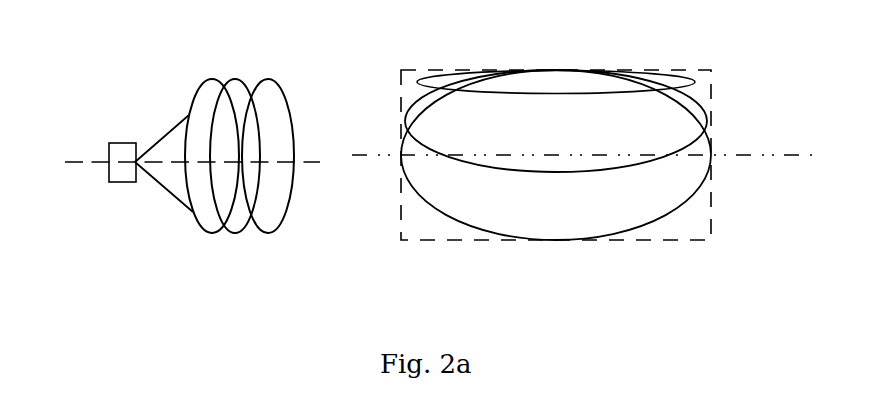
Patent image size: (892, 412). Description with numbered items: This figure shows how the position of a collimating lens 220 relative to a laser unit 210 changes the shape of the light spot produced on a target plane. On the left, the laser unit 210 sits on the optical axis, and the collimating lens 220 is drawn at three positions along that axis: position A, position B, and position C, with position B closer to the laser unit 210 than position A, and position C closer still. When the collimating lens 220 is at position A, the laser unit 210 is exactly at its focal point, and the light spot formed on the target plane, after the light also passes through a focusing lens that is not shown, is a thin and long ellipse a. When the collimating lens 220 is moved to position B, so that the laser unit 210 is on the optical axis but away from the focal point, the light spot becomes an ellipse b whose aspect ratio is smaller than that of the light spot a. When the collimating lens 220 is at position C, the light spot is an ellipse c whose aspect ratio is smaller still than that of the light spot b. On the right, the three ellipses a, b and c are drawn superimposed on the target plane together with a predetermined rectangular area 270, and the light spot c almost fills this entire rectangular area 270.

The laser unit 210 is at (115, 148).
The collimating lens 220 is at (239, 164).
The predetermined rectangular area 270 is at (591, 163).
The position A is at (268, 68).
The position B is at (233, 68).
The position C is at (212, 68).
The light spot a is at (688, 78).
The light spot b is at (700, 102).
The light spot c is at (687, 203).